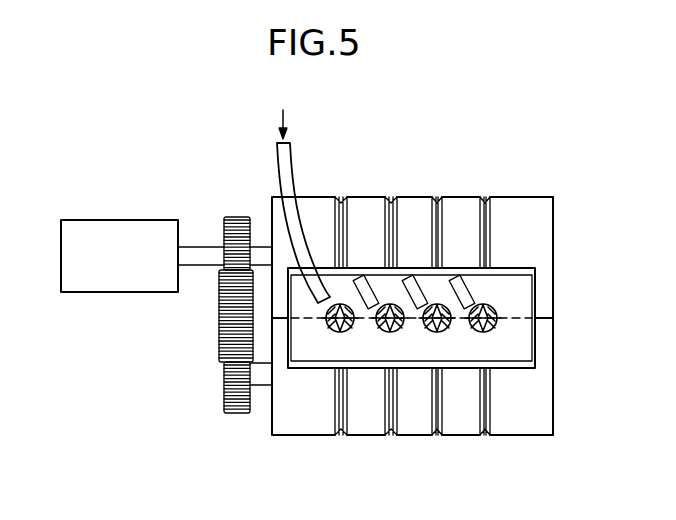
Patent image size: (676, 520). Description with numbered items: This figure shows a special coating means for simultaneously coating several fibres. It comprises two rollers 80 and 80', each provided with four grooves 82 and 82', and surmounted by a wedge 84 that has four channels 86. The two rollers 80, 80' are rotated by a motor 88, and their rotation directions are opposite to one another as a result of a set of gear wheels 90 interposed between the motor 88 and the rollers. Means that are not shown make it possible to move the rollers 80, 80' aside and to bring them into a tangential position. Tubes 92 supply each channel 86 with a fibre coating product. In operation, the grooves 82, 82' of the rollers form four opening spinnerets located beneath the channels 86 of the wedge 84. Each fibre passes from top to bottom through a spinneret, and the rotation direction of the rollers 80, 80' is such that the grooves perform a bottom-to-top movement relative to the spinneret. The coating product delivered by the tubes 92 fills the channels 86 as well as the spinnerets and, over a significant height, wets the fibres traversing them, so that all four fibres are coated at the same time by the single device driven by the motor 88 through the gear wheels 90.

The roller 80 is at (438, 376).
The roller 80' is at (441, 257).
The grooves 82 is at (412, 424).
The grooves 82' is at (412, 210).
The wedge 84 is at (522, 303).
The channels 86 is at (483, 333).
The motor 88 is at (117, 220).
The set of gear wheels 90 is at (195, 372).
The tubes 92 is at (362, 303).